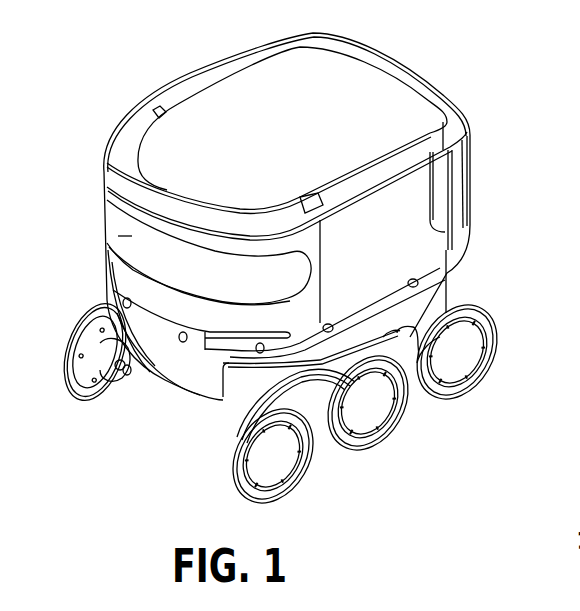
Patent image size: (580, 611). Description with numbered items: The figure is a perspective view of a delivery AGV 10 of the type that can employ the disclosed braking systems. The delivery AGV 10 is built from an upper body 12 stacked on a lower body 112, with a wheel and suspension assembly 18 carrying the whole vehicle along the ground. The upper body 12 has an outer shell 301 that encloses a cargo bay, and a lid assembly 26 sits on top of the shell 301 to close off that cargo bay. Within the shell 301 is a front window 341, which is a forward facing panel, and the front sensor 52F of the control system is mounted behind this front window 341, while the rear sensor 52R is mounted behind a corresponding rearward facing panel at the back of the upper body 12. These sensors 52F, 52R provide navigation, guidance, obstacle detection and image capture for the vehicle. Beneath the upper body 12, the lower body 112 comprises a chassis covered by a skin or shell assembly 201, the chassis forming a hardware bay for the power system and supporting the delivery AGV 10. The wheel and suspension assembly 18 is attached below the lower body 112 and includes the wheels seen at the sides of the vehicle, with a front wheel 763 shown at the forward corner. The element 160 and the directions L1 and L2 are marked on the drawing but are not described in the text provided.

The delivery AGV 10 is at (143, 66).
The lid assembly 26 is at (373, 91).
The upper body 12 is at (470, 103).
The rear sensor 52R is at (450, 87).
The front sensor 52F is at (143, 232).
The front window 341 is at (137, 243).
The shell 301 is at (113, 259).
The shell assembly 201 is at (176, 377).
The lower body 112 is at (507, 281).
The wheel and suspension assembly 18 is at (297, 515).
The front wheel 763 is at (248, 414).
The component 160 is at (540, 605).
The lateral axis L1 is at (140, 467).
The longitudinal axis L2 is at (407, 537).